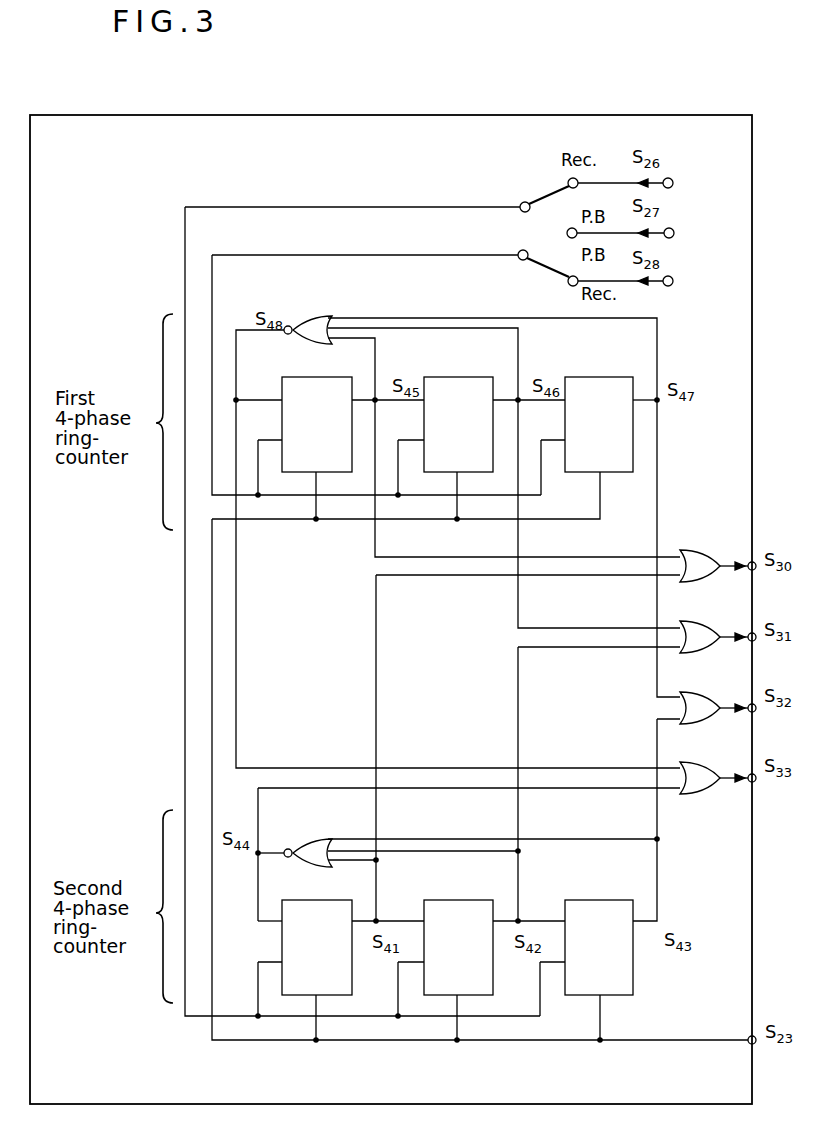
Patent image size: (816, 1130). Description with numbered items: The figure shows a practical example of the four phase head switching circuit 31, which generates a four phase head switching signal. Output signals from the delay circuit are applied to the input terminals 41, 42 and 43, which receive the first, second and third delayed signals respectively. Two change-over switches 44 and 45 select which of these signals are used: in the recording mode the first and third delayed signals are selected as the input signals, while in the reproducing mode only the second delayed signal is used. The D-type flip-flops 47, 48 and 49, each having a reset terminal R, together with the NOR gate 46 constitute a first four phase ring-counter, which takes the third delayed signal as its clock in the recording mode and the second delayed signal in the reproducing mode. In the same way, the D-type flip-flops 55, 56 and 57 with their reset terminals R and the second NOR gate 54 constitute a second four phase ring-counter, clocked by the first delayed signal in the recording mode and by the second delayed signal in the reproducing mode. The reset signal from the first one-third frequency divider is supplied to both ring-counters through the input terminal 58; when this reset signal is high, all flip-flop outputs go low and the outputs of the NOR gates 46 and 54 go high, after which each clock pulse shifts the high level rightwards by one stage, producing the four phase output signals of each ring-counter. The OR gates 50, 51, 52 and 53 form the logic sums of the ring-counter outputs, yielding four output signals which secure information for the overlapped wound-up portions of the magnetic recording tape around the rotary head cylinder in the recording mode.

The four phase head switching circuit 31 is at (422, 115).
The input terminal 41 is at (673, 180).
The input terminal 42 is at (674, 230).
The input terminal 43 is at (673, 279).
The change-over switch 44 is at (543, 191).
The change-over switch 45 is at (543, 270).
The NOR gate 46 is at (318, 314).
The D-type flip-flop 47 is at (318, 377).
The D-type flip-flop 48 is at (455, 377).
The D-type flip-flop 49 is at (595, 377).
The OR gate 50 is at (707, 550).
The OR gate 51 is at (707, 621).
The OR gate 52 is at (707, 692).
The OR gate 53 is at (709, 762).
The second NOR gate 54 is at (318, 838).
The D-type flip-flop 55 is at (318, 900).
The D-type flip-flop 56 is at (455, 900).
The D-type flip-flop 57 is at (595, 900).
The input terminal 58 is at (749, 1047).